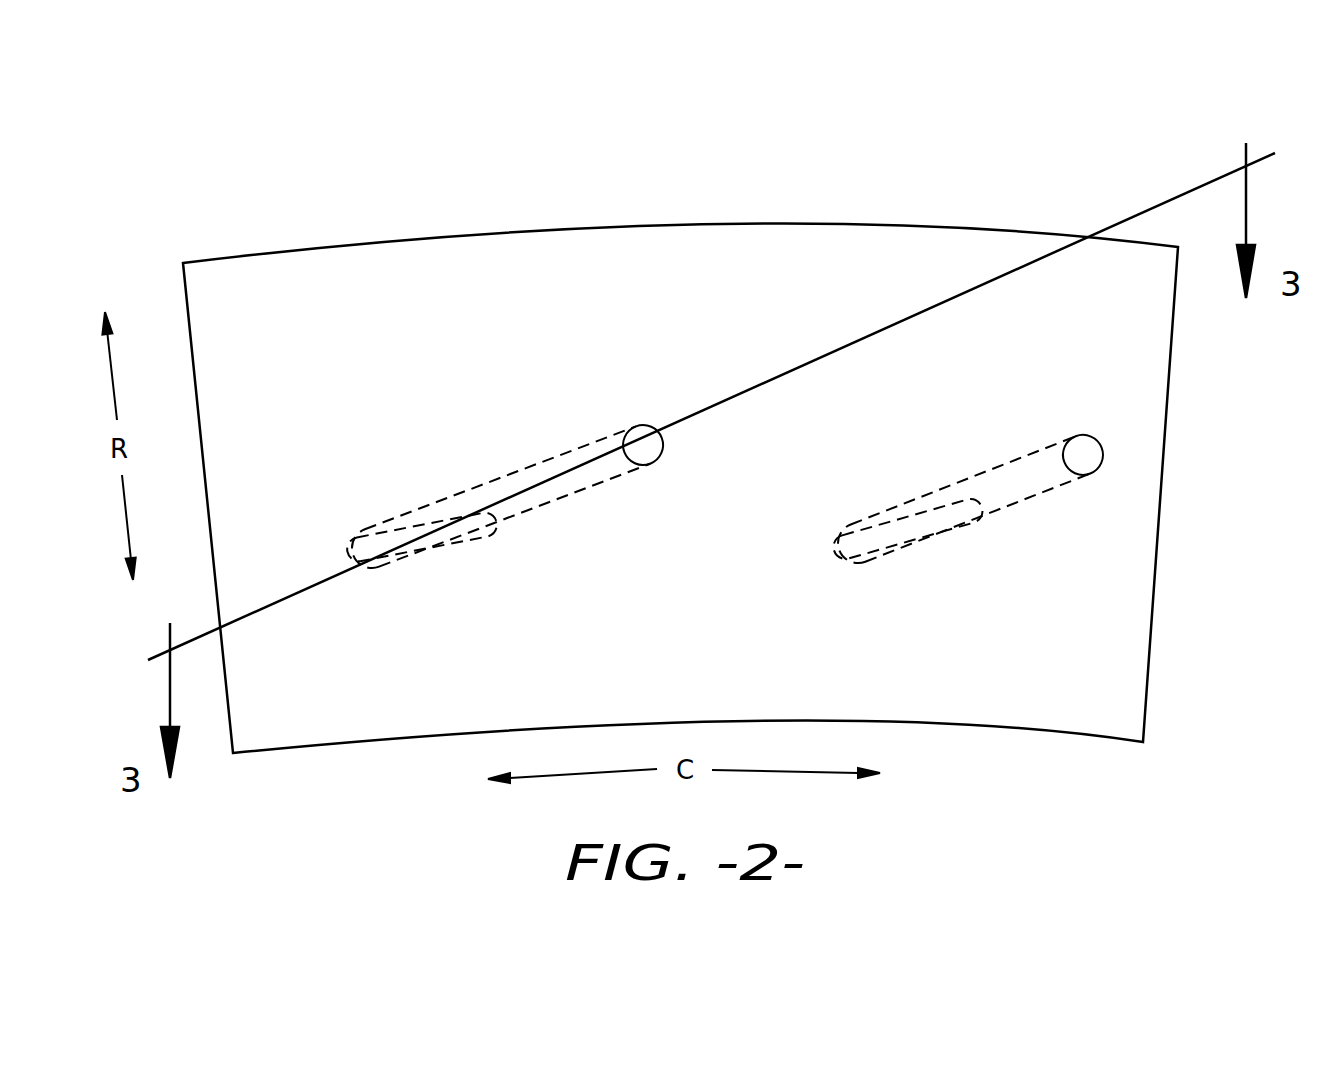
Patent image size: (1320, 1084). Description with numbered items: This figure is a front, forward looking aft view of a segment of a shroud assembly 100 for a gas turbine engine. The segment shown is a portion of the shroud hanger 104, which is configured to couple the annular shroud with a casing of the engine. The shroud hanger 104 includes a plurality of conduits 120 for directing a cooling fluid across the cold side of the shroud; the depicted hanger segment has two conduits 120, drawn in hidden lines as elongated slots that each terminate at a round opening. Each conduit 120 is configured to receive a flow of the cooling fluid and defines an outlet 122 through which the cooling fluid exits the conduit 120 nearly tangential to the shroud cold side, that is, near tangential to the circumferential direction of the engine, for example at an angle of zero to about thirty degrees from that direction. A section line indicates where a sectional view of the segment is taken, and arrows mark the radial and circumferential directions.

The shroud assembly 100 is at (262, 193).
The shroud hanger 104 is at (1125, 582).
The conduit 120 is at (492, 488).
The outlet 122 is at (870, 538).